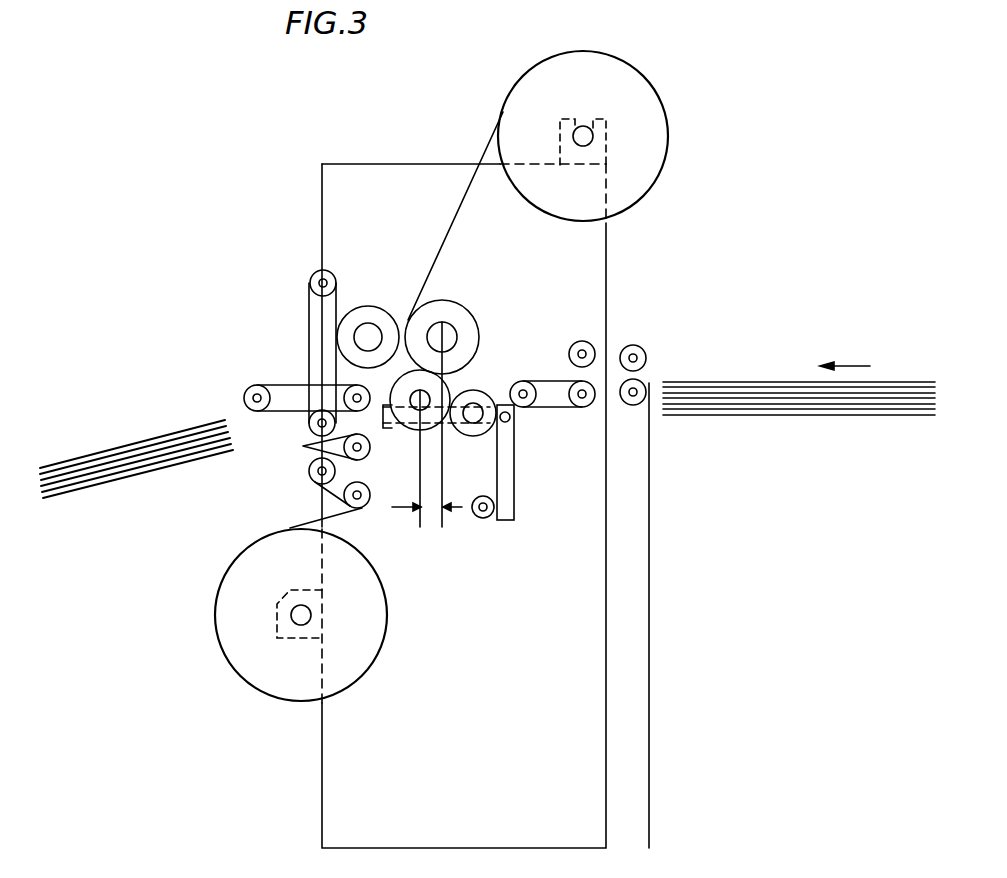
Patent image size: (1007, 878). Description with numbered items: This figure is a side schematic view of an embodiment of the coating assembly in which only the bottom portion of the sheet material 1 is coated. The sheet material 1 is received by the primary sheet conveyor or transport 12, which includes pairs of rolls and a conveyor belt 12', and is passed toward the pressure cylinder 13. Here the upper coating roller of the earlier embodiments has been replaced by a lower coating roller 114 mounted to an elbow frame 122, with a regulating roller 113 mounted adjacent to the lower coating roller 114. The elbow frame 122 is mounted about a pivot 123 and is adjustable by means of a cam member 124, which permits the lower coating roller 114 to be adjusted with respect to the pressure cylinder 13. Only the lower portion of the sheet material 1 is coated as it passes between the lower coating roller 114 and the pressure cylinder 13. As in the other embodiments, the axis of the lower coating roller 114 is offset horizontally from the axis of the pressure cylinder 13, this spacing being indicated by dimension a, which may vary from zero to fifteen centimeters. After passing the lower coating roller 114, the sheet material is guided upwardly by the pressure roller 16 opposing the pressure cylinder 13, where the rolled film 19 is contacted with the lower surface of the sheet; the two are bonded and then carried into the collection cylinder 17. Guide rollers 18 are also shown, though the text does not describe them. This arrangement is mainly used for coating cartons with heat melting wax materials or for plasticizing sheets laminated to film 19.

The sheet material 1 is at (110, 447).
The primary sheet conveyor or transport 12 is at (440, 380).
The conveyor belt 12' is at (552, 372).
The pressure cylinder 13 is at (496, 292).
The pressure roller 16 is at (386, 290).
The collection roller 17 is at (668, 155).
The guide rollers 18 is at (312, 274).
The rolled film 19 is at (227, 660).
The regulating roller 113 is at (465, 434).
The lower coating roller 114 is at (447, 389).
The elbow frame 122 is at (514, 507).
The pivot 123 is at (510, 421).
The cam member 124 is at (484, 518).
The dimension a is at (427, 508).